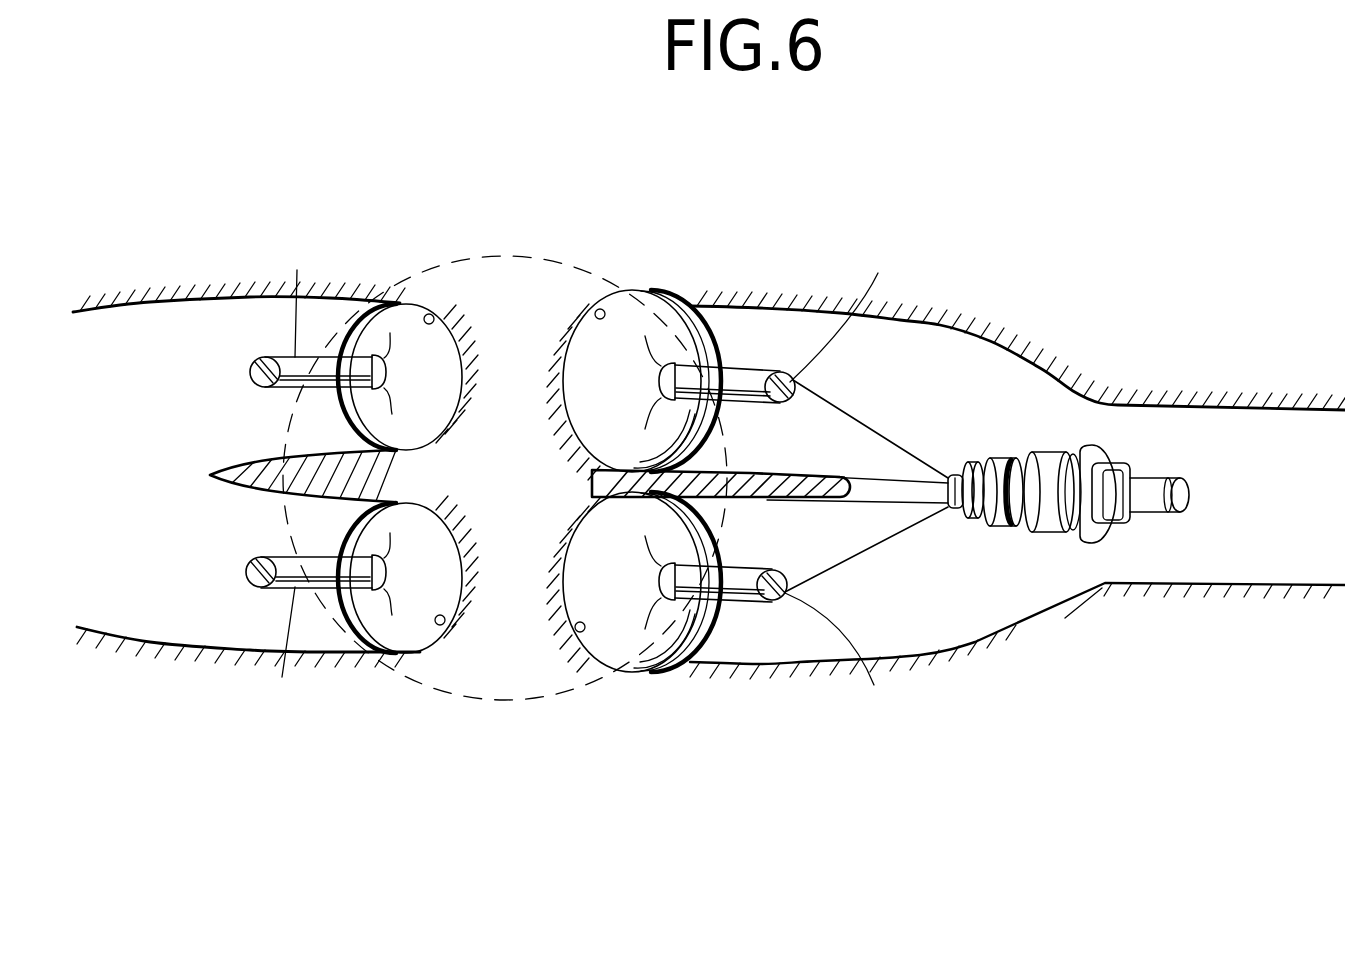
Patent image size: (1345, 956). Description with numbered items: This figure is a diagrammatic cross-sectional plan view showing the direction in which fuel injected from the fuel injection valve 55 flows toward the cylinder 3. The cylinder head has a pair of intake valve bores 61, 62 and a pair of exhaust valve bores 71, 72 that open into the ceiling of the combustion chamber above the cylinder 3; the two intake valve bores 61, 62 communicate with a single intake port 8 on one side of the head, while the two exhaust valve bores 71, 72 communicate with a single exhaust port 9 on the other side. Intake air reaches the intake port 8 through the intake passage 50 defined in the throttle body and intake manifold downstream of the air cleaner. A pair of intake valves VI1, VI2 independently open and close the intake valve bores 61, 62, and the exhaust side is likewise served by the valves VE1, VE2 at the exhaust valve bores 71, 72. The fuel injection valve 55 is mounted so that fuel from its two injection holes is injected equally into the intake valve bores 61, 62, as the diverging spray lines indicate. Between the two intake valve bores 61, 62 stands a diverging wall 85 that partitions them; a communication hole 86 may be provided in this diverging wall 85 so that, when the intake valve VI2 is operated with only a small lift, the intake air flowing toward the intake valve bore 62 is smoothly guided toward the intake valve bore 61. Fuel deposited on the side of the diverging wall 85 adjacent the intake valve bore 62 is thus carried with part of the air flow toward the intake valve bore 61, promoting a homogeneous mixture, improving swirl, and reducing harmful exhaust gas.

The cylinder 3 is at (465, 697).
The intake port 8 is at (1025, 602).
The exhaust port 9 is at (93, 613).
The intake passage 50 is at (1318, 517).
The fuel injection valve 55 is at (1072, 449).
The intake valve bore 61 is at (576, 638).
The intake valve bore 62 is at (596, 317).
The exhaust valve bore 71 is at (446, 624).
The exhaust valve bore 72 is at (434, 319).
The diverging wall 85 is at (796, 474).
The communication hole 86 is at (741, 473).
The first exhaust valve axis VE1 is at (289, 652).
The second exhaust valve axis VE2 is at (305, 295).
The intake valve VI1 is at (850, 662).
The intake valve VI2 is at (865, 312).